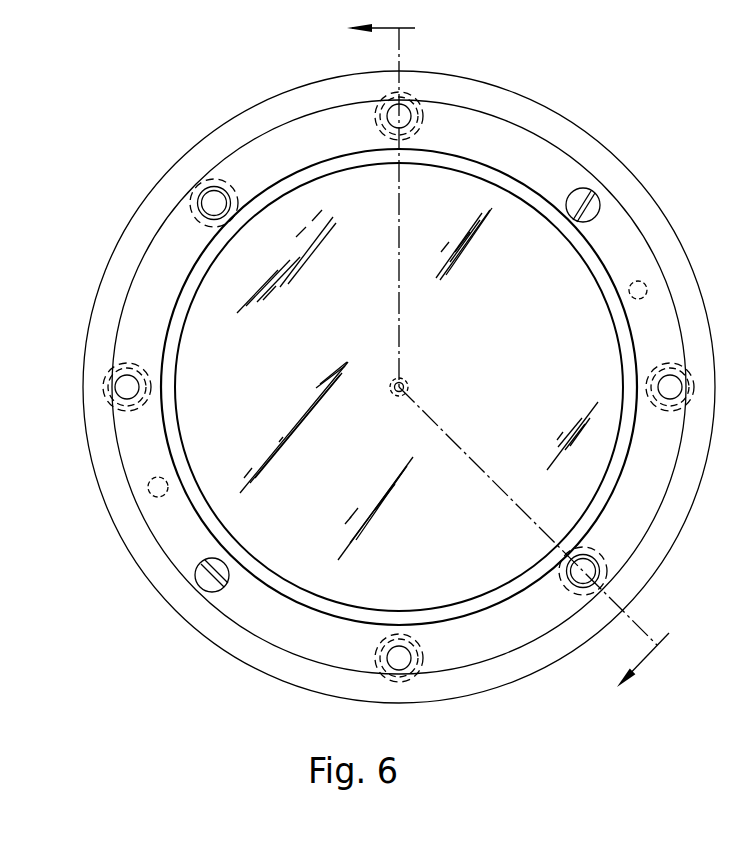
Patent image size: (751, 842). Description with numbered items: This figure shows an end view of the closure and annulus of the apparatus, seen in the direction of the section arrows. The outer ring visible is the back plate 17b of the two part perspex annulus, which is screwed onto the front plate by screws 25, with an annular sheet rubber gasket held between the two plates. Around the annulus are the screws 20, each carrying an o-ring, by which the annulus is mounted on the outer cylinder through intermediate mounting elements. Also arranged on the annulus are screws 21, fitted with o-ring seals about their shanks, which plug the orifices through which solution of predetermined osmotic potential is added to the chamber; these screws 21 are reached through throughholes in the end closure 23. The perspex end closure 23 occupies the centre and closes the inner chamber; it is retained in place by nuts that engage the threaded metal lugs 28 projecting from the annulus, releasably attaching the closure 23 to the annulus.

The back plate 17b is at (145, 288).
The screw 20 is at (417, 108).
The screw 21 is at (200, 188).
The end closure 23 is at (338, 326).
The screw 25 is at (596, 205).
The threaded metal lug 28 is at (648, 289).